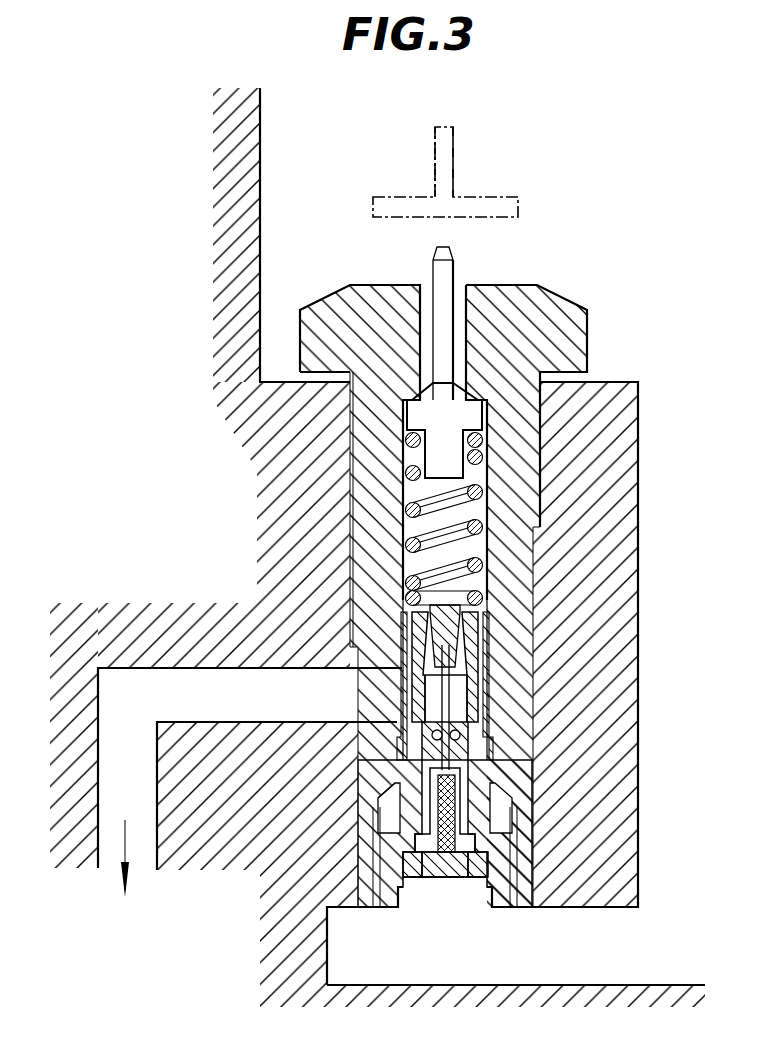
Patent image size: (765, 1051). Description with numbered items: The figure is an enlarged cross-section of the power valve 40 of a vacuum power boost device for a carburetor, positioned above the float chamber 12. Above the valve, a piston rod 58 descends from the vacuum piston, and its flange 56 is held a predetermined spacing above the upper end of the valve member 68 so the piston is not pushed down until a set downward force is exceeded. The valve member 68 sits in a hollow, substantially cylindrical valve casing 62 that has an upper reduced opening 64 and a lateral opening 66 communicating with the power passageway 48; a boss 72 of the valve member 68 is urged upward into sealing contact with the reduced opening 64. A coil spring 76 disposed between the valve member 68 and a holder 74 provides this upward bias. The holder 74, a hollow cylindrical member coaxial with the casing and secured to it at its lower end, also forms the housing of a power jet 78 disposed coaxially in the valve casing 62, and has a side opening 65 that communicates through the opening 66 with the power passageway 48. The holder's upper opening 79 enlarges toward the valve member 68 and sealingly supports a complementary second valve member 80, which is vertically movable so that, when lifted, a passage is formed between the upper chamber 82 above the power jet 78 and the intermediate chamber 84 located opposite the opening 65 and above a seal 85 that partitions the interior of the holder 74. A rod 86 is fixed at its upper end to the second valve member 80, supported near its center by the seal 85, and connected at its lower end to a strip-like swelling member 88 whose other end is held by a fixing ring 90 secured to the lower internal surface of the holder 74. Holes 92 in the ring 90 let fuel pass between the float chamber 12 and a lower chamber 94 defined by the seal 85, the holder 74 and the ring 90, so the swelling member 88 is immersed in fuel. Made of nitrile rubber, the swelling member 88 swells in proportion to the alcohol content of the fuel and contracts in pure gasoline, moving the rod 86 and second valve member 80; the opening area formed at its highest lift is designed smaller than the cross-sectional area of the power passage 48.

The float chamber 12 is at (696, 505).
The power valve 40 is at (364, 550).
The power passageway 48 is at (135, 690).
The flange 56 is at (500, 195).
The piston rod 58 is at (455, 154).
The valve casing 62 is at (318, 326).
The upper reduced opening 64 is at (462, 288).
The side opening 65 is at (425, 690).
The lateral opening 66 is at (400, 705).
The valve member 68 is at (455, 253).
The boss 72 is at (420, 413).
The spring holder 74 is at (492, 775).
The coil spring 76 is at (405, 508).
The power jet 78 is at (496, 652).
The upper opening 79 is at (478, 617).
The second valve member 80 is at (440, 607).
The upper chamber 82 is at (460, 565).
The intermediate chamber 84 is at (450, 690).
The seal 85 is at (462, 745).
The rod 86 is at (470, 713).
The swelling member 88 is at (463, 818).
The fixing ring 90 is at (445, 878).
The holes 92 is at (425, 878).
The lower chamber 94 is at (430, 793).